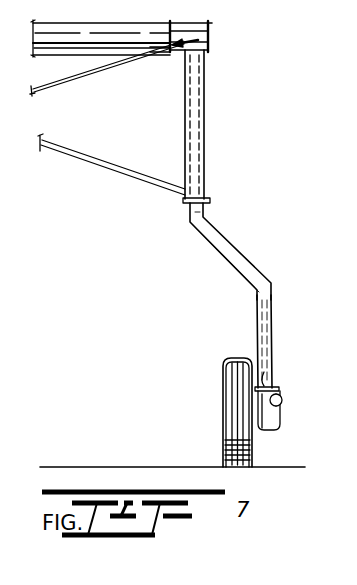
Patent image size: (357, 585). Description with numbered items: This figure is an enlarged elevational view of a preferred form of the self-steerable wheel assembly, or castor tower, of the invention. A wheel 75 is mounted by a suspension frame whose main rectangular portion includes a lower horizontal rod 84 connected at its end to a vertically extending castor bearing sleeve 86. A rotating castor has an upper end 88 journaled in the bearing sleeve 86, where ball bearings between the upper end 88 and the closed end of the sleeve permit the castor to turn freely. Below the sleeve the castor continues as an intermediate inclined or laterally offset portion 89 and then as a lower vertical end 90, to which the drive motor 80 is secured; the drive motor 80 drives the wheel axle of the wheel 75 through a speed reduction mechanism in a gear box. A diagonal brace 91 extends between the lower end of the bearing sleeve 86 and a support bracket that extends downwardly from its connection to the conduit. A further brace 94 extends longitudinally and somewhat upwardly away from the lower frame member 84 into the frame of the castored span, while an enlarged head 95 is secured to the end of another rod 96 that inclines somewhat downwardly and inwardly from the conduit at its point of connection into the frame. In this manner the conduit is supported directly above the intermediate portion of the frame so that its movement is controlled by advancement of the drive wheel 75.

The wheel 75 is at (224, 392).
The drive motor 80 is at (279, 396).
The lower horizontal rod 84 is at (207, 188).
The castor bearing sleeve 86 is at (206, 160).
The upper end 88 is at (206, 124).
The intermediate inclined portion 89 is at (248, 256).
The lower vertical end 90 is at (273, 327).
The diagonal brace 91 is at (272, 376).
The brace 94 is at (117, 170).
The enlarged head 95 is at (205, 40).
The rod 96 is at (70, 80).